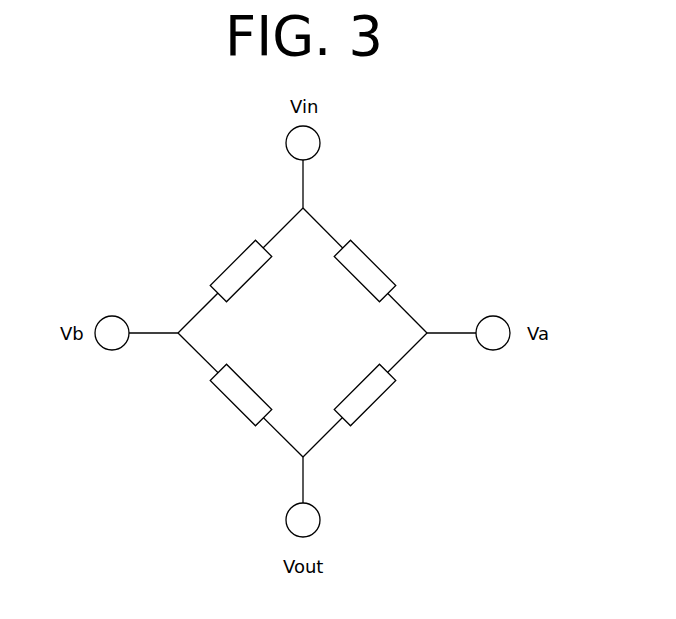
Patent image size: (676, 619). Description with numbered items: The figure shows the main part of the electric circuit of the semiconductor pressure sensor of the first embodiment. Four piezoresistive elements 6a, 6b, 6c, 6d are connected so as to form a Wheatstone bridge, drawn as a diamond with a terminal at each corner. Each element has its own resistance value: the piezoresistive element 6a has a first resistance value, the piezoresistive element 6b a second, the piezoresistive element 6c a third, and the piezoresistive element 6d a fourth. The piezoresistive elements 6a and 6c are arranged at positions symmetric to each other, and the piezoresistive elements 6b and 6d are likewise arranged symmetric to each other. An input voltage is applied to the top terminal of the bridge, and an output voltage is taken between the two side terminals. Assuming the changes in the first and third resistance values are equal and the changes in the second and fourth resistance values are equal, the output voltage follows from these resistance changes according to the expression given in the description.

The piezoresistive element 6a is at (226, 272).
The piezoresistive element 6b is at (217, 388).
The piezoresistive element 6c is at (388, 388).
The piezoresistive element 6d is at (388, 273).